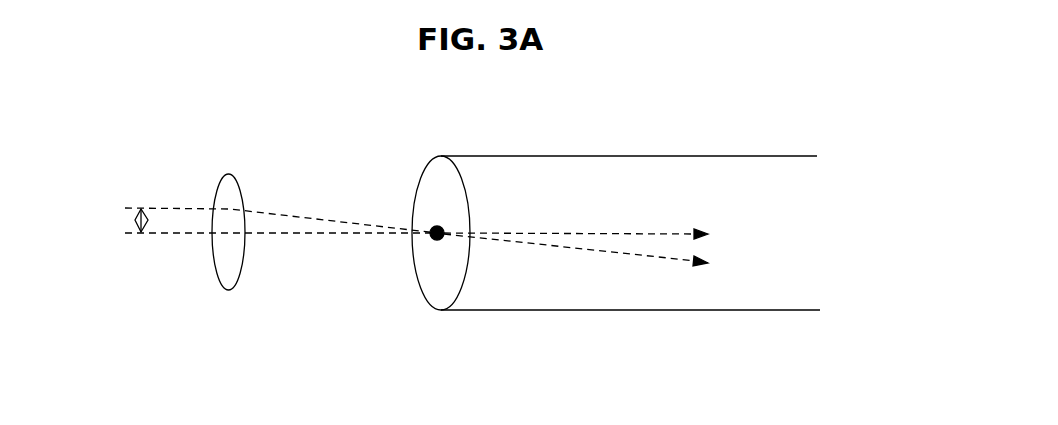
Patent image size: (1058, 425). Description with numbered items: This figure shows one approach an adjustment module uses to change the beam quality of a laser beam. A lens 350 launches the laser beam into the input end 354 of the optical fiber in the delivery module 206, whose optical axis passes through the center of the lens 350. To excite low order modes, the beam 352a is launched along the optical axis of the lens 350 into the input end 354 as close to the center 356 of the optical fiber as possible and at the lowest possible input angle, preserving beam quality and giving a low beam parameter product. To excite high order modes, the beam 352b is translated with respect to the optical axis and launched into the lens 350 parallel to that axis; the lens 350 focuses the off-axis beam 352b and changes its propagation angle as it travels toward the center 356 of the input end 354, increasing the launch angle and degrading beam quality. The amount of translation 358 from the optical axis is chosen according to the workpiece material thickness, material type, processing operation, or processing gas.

The delivery module 206 is at (762, 155).
The lens 350 is at (237, 285).
The beam 352a is at (145, 235).
The translated beam 352b is at (155, 208).
The input end 354 is at (465, 287).
The center 356 is at (432, 228).
The amount of translation 358 is at (134, 224).